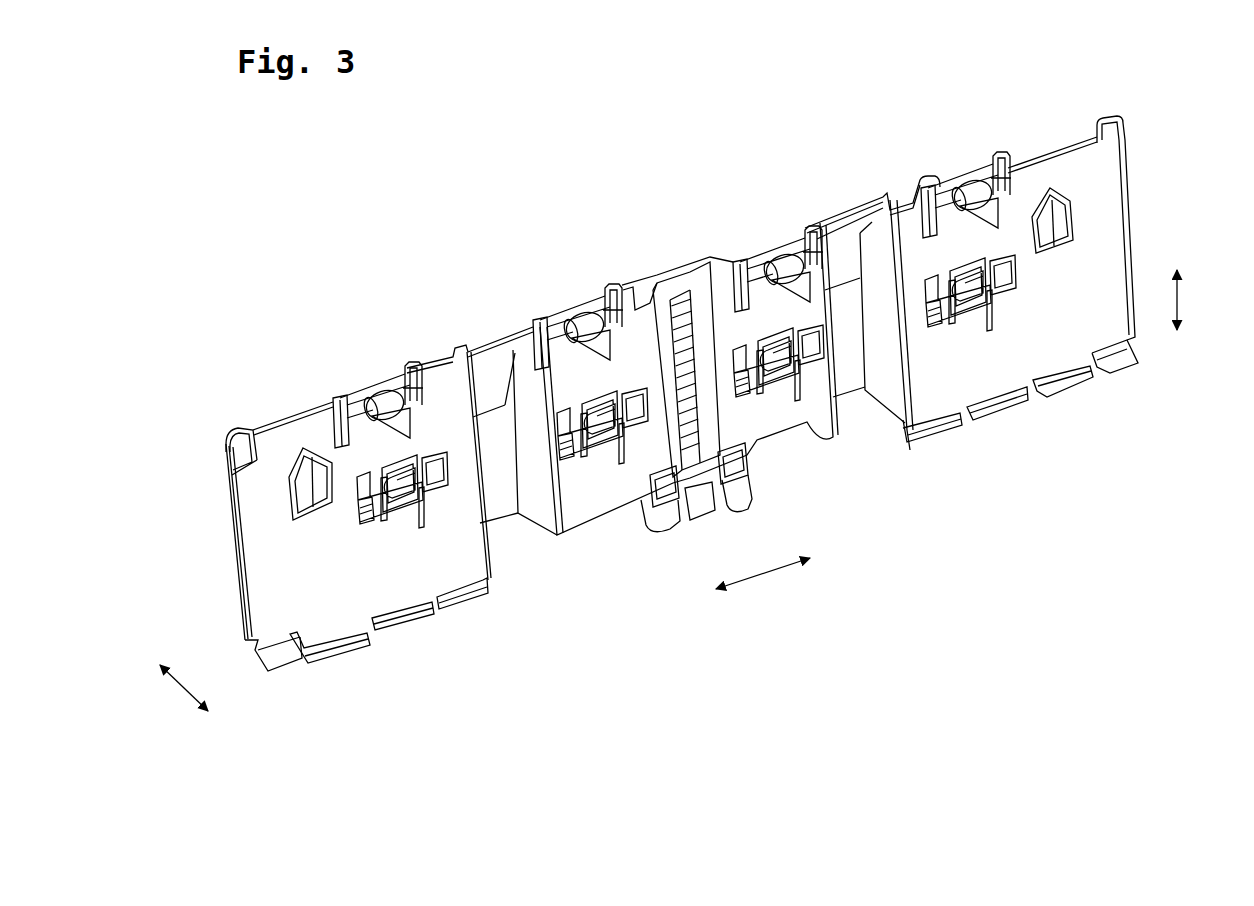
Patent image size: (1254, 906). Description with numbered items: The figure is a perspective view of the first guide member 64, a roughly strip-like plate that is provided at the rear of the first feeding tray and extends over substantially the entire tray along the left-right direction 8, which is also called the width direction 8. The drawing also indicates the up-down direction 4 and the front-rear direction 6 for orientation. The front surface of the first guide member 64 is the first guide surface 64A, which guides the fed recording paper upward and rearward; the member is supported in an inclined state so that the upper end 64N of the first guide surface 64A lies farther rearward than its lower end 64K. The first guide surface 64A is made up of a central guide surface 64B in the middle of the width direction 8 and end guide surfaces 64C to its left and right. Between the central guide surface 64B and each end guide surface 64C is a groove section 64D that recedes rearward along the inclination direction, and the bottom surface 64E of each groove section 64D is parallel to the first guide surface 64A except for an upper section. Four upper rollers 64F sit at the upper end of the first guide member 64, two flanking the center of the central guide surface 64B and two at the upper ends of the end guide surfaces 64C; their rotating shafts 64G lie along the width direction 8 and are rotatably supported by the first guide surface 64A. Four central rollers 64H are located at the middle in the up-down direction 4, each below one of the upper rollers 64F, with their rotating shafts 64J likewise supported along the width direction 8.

The first guide member 64 is at (356, 330).
The first guide surface 64A is at (1102, 228).
The central guide surface 64B is at (763, 423).
The end guide surfaces 64C is at (355, 600).
The groove sections 64D is at (522, 538).
The bottom surface 64E is at (491, 507).
The upper rollers 64F is at (390, 392).
The rotating shafts 64G is at (340, 397).
The central rollers 64H is at (407, 503).
The rotating shafts 64J is at (377, 520).
The lower end 64K is at (943, 430).
The upper end 64N is at (925, 174).
The up-down direction 4 is at (1178, 297).
The front-rear direction 6 is at (180, 687).
The left-right direction 8 is at (757, 577).